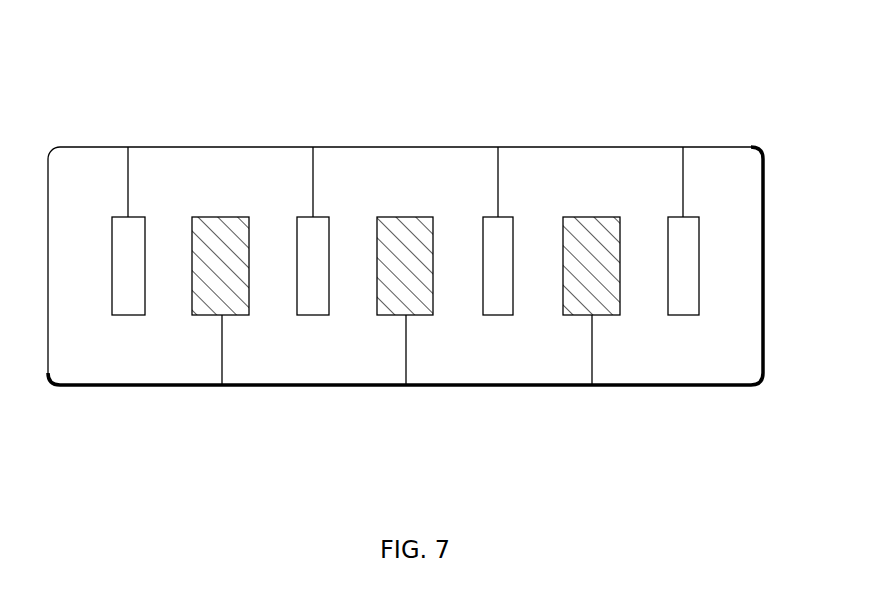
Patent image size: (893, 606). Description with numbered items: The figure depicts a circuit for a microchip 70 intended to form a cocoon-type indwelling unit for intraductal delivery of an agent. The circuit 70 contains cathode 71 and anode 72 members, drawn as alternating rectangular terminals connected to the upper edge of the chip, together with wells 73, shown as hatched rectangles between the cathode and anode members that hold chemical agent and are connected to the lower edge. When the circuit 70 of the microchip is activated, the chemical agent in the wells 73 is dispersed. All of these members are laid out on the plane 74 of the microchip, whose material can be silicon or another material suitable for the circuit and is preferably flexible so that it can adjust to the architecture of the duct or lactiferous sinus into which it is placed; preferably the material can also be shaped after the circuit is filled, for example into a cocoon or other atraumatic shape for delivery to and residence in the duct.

The microchip circuit 70 is at (122, 66).
The cathode member 71 is at (128, 160).
The anode member 72 is at (313, 161).
The well 73 is at (205, 315).
The plane 74 is at (712, 358).